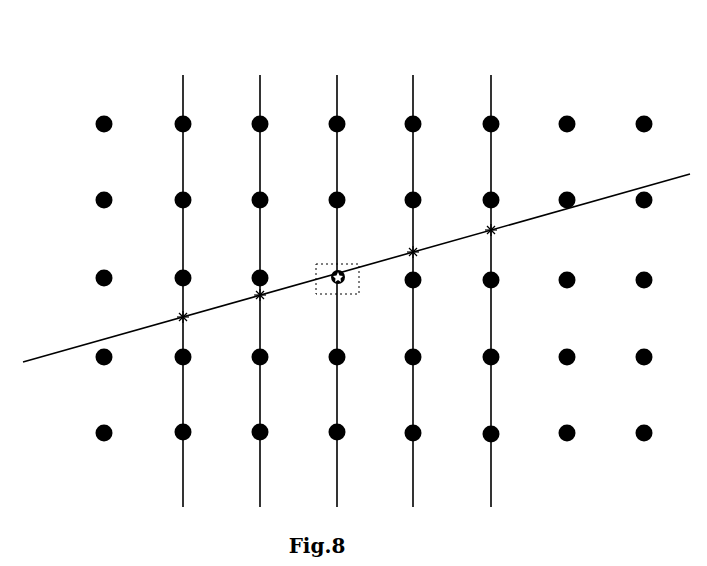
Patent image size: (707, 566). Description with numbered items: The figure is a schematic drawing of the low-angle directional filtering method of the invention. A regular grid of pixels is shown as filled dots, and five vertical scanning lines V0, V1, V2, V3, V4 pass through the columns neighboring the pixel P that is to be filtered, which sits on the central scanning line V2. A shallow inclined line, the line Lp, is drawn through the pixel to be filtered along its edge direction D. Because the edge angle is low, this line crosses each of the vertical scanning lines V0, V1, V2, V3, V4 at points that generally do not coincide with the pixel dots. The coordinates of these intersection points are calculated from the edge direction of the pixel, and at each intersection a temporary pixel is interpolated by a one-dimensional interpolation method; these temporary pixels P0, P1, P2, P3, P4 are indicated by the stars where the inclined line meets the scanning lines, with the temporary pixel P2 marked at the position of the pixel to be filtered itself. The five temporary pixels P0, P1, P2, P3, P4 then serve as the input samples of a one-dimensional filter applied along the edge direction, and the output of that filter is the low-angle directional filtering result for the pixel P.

The vertical scanning line V0 is at (183, 274).
The vertical scanning line V1 is at (260, 274).
The vertical scanning line V2 is at (337, 274).
The vertical scanning line V3 is at (413, 274).
The vertical scanning line V4 is at (491, 274).
The temporary pixel P0 is at (500, 227).
The temporary pixel P1 is at (425, 250).
The temporary pixel P2 is at (333, 274).
The temporary pixel P3 is at (243, 297).
The temporary pixel P4 is at (167, 319).